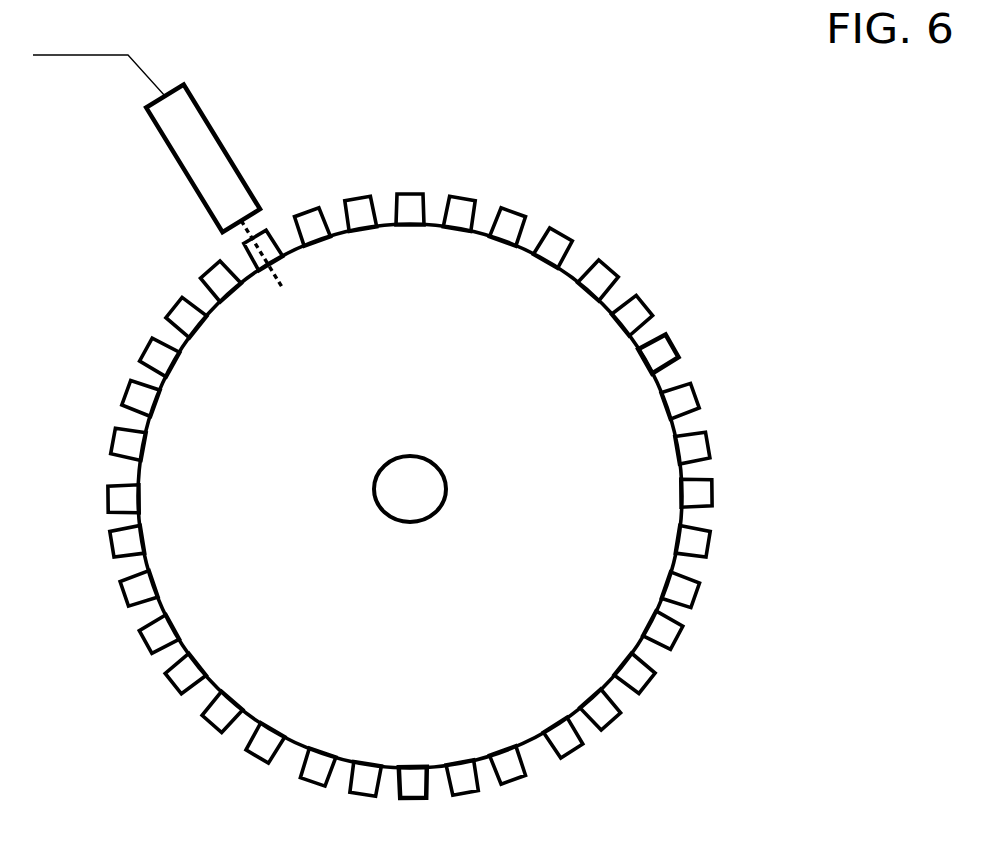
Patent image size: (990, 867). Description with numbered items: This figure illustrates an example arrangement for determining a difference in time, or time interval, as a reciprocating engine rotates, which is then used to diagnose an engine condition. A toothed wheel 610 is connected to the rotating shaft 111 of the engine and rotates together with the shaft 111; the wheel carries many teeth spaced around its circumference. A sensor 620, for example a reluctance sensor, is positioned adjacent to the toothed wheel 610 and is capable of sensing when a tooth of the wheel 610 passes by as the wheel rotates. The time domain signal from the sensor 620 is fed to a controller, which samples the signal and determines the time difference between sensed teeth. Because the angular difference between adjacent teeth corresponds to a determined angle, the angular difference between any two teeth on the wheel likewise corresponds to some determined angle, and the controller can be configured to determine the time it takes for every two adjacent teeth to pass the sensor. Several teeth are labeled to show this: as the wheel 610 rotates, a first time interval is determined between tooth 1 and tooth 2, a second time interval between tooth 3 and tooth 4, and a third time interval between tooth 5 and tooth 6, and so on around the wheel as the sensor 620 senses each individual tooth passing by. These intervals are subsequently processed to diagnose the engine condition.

The toothed wheel 610 is at (475, 485).
The sensor 620 is at (217, 133).
The rotating shaft 111 is at (447, 490).
The tooth 1 is at (313, 218).
The tooth 2 is at (361, 204).
The tooth 3 is at (410, 198).
The tooth 4 is at (459, 204).
The tooth 5 is at (508, 218).
The tooth 6 is at (553, 241).